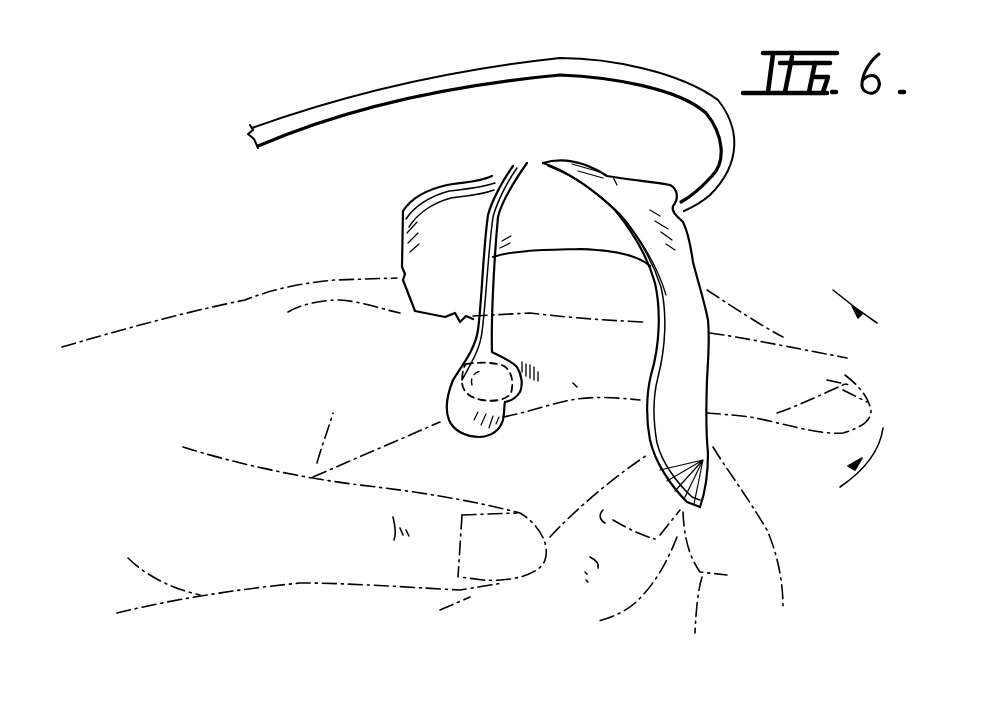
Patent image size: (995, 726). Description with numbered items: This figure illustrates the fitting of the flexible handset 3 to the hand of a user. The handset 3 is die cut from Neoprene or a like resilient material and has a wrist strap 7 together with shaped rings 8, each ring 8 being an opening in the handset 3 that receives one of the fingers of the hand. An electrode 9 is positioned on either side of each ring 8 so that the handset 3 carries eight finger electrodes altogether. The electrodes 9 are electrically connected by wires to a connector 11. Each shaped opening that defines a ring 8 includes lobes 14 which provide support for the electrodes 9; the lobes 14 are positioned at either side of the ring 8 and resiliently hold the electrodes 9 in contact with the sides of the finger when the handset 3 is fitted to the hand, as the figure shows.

The flexible handset 3 is at (401, 218).
The wrist strap 7 is at (683, 300).
The shaped ring 8 is at (506, 403).
The electrode 9 is at (455, 379).
The connector 11 is at (616, 184).
The lobe 14 is at (538, 374).